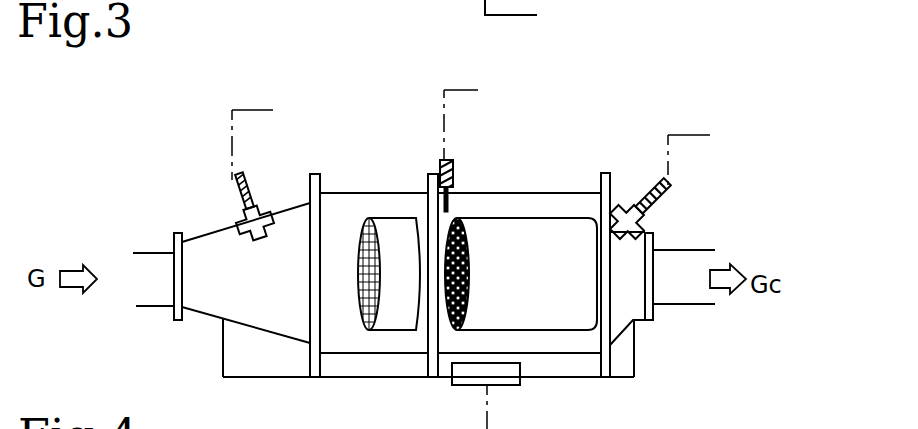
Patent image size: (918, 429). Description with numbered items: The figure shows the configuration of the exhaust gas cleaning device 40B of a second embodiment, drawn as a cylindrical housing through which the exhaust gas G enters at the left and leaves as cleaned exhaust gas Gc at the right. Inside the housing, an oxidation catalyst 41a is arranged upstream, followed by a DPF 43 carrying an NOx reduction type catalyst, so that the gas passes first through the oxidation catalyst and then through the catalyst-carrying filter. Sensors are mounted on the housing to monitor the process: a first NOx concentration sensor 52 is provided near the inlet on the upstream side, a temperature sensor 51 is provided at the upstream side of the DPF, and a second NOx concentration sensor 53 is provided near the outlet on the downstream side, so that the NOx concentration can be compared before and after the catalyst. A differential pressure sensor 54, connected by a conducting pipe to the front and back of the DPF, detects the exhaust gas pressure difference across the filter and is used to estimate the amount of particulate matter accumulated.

The exhaust gas cleaning device 40B is at (578, 190).
The oxidation catalyst 41a is at (397, 232).
The DPF carrying an NOx reduction type catalyst 43 is at (517, 232).
The temperature sensor 51 is at (448, 158).
The first NOx concentration sensor 52 is at (243, 190).
The second NOx concentration sensor 53 is at (670, 198).
The differential pressure sensor 54 is at (503, 378).